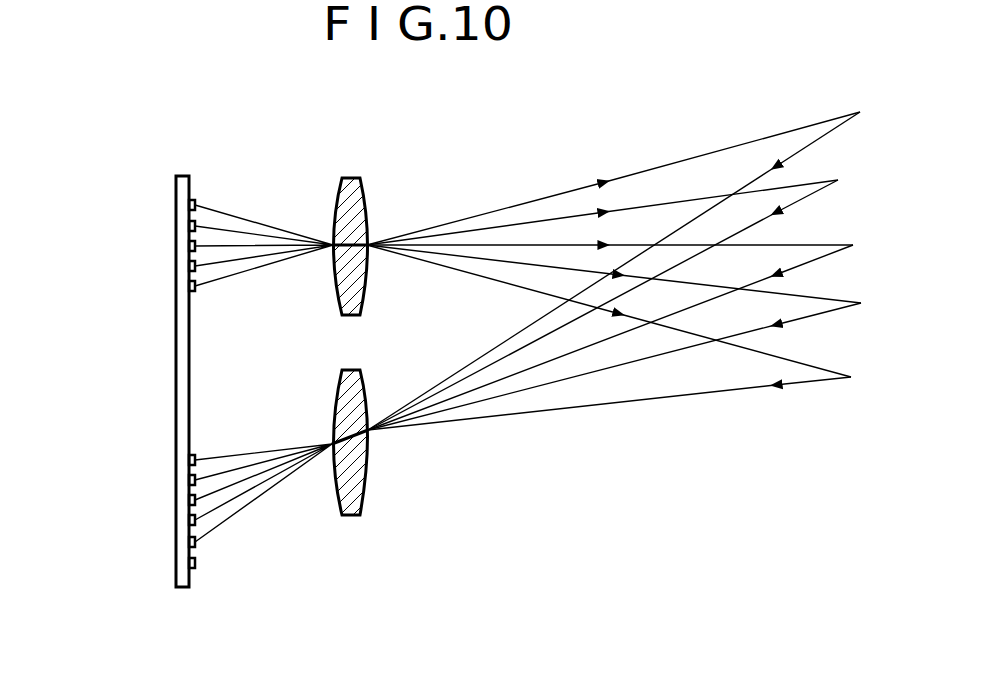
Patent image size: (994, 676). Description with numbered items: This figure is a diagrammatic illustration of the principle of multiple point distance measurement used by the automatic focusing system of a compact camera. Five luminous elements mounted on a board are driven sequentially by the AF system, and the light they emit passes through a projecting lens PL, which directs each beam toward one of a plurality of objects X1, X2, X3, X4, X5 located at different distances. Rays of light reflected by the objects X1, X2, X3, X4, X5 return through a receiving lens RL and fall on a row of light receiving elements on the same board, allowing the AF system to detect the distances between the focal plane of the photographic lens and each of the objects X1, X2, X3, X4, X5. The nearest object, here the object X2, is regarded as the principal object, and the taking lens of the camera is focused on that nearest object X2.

The projecting lens PL is at (365, 184).
The receiving lens RL is at (368, 477).
The object X1 is at (887, 112).
The object X2 is at (865, 180).
The object X3 is at (880, 245).
The object X4 is at (888, 303).
The object X5 is at (878, 377).